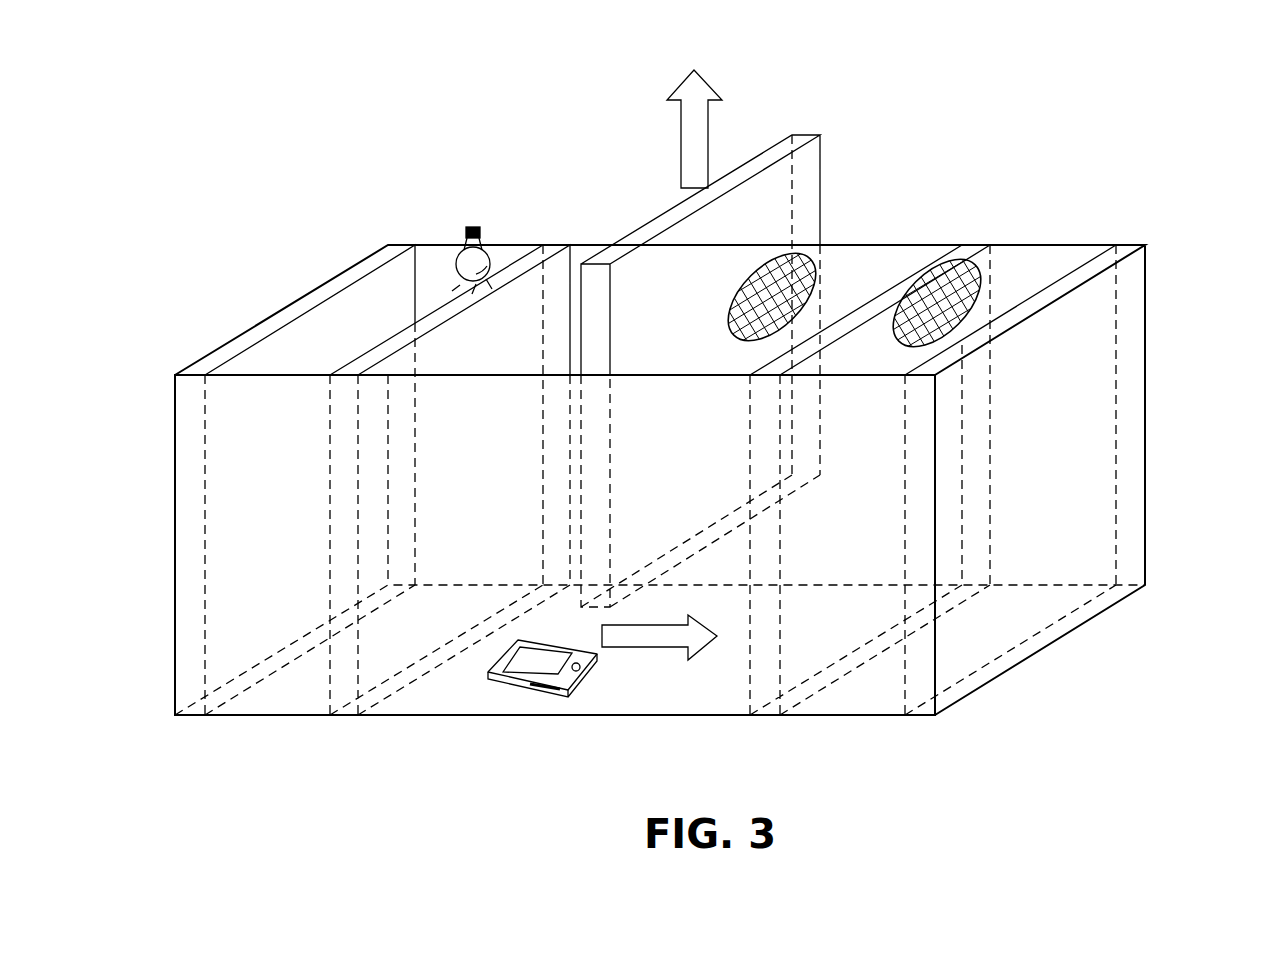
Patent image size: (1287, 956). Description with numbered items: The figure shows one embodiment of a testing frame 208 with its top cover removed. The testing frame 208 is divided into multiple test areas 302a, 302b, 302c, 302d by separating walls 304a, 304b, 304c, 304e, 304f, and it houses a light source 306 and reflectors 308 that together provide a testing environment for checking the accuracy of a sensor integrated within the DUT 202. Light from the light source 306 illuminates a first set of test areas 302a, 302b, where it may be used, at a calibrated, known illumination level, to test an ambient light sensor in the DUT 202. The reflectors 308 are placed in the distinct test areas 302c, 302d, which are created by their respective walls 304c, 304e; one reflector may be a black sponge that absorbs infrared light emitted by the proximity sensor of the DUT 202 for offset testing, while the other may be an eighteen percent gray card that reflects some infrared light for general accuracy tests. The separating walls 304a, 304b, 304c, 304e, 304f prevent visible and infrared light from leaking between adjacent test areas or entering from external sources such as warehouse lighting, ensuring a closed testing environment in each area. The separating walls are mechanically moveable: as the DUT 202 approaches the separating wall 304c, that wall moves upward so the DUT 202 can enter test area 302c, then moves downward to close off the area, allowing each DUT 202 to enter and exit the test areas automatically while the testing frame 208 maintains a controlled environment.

The testing frame 208 is at (1152, 277).
The DUT 202 is at (552, 688).
The test area 302a is at (305, 680).
The test area 302b is at (437, 675).
The test area 302c is at (703, 662).
The test area 302d is at (870, 680).
The separating wall 304a is at (400, 243).
The separating wall 304b is at (547, 245).
The separating wall 304c is at (800, 133).
The separating wall 304e is at (972, 245).
The separating wall 304f is at (1128, 247).
The light source 306 is at (475, 223).
The reflectors 308 is at (930, 265).